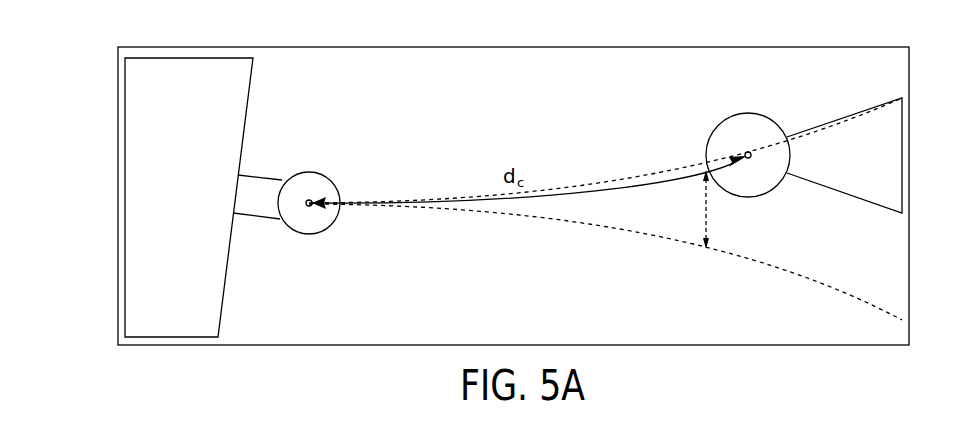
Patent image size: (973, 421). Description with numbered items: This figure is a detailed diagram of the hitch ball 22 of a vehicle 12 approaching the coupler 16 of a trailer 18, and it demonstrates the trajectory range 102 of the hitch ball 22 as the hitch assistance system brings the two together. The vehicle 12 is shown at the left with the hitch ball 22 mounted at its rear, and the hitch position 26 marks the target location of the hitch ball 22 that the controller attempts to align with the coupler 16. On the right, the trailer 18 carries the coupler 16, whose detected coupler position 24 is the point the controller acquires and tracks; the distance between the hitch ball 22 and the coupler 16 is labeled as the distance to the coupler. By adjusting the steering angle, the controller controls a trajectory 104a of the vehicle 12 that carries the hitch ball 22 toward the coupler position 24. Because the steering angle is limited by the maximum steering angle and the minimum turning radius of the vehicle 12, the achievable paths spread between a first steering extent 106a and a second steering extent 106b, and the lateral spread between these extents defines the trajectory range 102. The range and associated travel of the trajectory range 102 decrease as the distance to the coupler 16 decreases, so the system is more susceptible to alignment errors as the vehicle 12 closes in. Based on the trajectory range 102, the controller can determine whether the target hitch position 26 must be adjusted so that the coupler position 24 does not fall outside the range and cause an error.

The vehicle 12 is at (137, 100).
The coupler 16 is at (738, 113).
The trailer 18 is at (885, 158).
The hitch ball 22 is at (304, 172).
The coupler position 24 is at (744, 153).
The hitch position 26 is at (315, 200).
The trajectory range 102 is at (716, 225).
The trajectory 104a is at (744, 153).
The first steering extent 106a is at (572, 188).
The second steering extent 106b is at (594, 227).